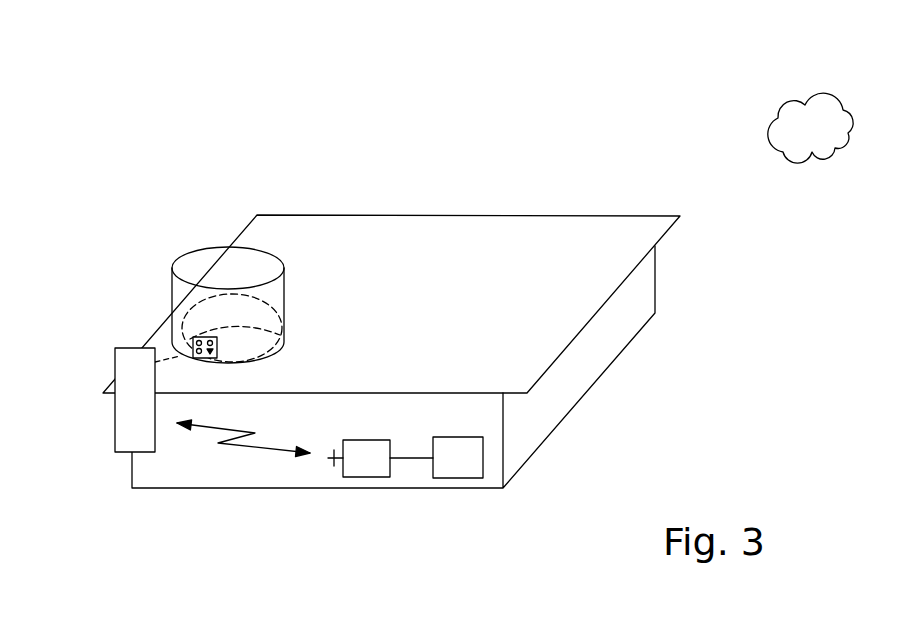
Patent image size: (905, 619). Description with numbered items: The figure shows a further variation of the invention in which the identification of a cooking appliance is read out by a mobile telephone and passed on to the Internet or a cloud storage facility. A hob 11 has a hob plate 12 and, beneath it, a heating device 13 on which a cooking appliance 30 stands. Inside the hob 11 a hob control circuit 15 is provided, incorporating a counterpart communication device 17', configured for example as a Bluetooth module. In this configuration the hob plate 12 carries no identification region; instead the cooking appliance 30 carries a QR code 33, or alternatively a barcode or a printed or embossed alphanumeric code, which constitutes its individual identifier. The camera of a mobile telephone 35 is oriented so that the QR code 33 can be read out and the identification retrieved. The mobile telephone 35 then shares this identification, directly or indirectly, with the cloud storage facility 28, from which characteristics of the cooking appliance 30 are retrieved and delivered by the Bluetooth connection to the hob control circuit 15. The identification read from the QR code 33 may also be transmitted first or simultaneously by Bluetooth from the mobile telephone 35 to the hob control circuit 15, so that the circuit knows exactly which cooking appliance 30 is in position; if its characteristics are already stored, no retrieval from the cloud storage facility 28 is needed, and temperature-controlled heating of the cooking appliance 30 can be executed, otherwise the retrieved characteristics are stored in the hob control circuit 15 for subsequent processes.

The hob 11 is at (578, 146).
The hob plate 12 is at (390, 232).
The heating device 13 is at (197, 307).
The hob control circuit 15 is at (445, 470).
The counterpart communication device 17' is at (380, 504).
The cloud storage facility 28 is at (792, 117).
The cooking appliance 30 is at (227, 275).
The QR code 33 is at (229, 343).
The mobile telephone 35 is at (115, 428).